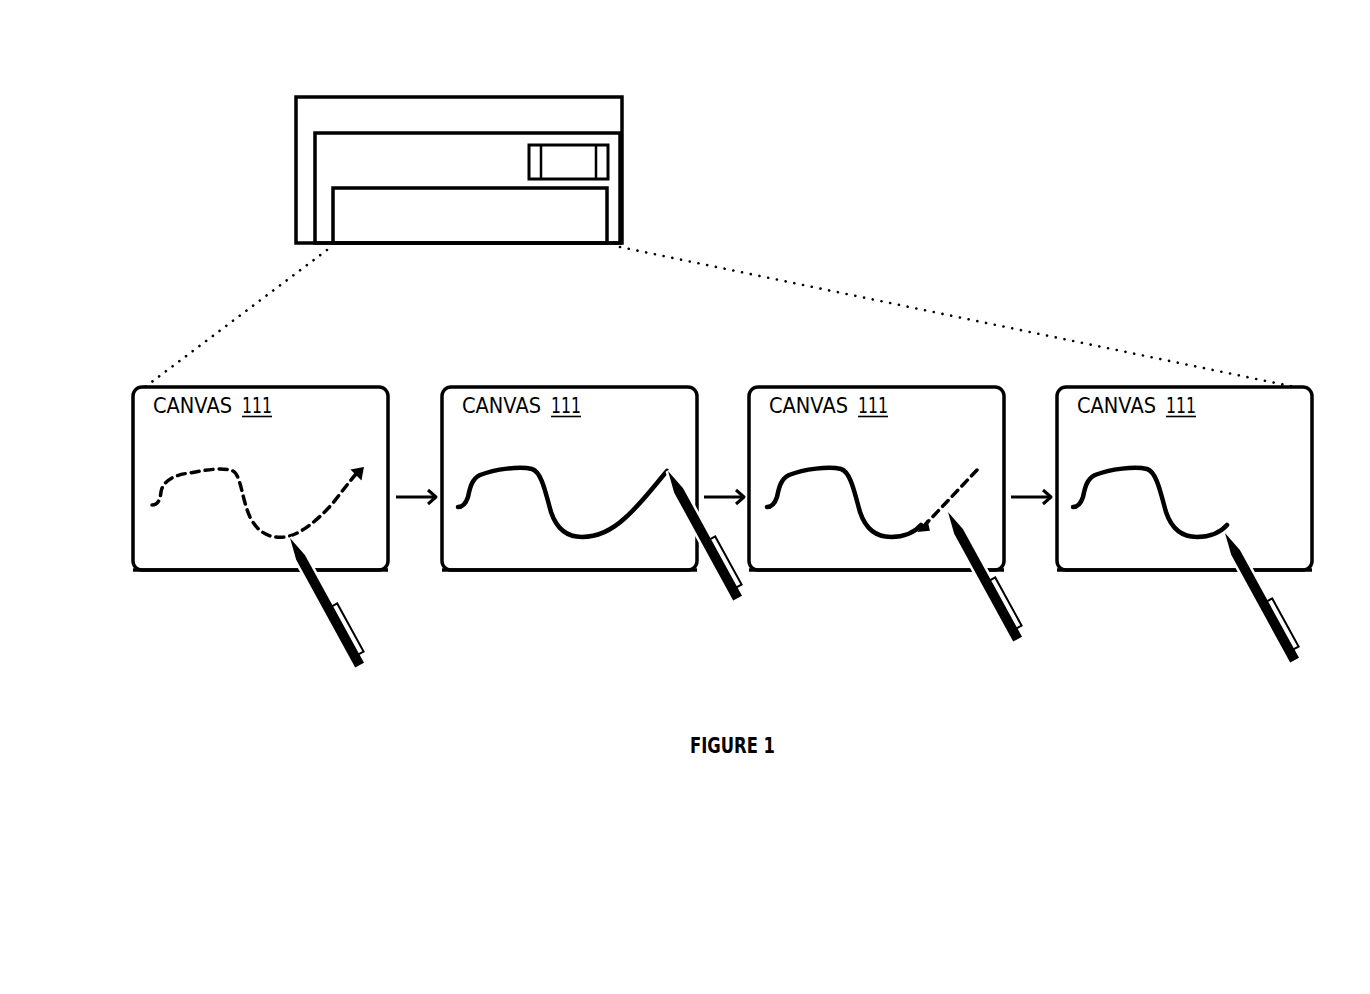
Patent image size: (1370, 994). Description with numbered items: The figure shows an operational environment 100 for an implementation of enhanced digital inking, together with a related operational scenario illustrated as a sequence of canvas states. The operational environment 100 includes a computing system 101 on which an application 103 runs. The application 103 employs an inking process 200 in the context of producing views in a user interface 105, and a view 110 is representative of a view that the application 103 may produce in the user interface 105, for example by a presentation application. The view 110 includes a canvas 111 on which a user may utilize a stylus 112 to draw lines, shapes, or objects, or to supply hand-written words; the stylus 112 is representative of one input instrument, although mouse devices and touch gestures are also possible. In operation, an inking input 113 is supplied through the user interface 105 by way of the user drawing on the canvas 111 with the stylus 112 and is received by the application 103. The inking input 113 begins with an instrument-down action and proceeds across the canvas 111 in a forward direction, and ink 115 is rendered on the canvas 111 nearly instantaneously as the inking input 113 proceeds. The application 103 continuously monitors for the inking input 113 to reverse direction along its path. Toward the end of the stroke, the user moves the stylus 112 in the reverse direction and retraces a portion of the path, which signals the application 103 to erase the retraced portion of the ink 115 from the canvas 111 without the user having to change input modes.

The operational environment 100 is at (144, 57).
The computing system 101 is at (562, 130).
The application 103 is at (512, 176).
The inking process 200 is at (580, 176).
The user interface 105 is at (535, 230).
The view 110 is at (172, 571).
The canvas 111 is at (722, 478).
The stylus 112 is at (344, 647).
The inking input 113 is at (173, 487).
The ink 115 is at (559, 518).